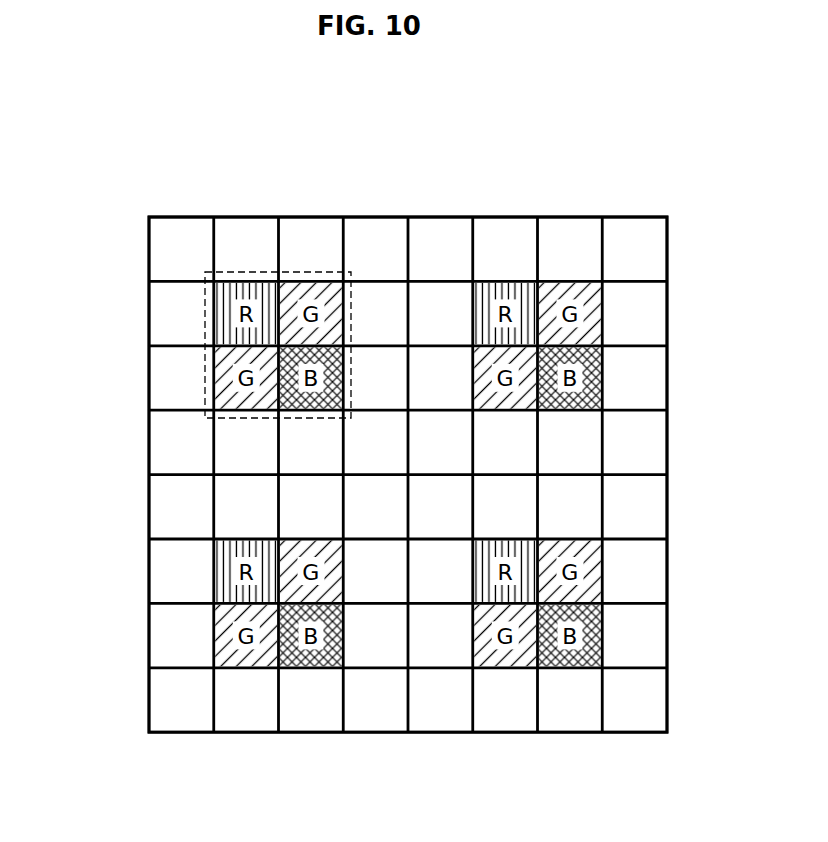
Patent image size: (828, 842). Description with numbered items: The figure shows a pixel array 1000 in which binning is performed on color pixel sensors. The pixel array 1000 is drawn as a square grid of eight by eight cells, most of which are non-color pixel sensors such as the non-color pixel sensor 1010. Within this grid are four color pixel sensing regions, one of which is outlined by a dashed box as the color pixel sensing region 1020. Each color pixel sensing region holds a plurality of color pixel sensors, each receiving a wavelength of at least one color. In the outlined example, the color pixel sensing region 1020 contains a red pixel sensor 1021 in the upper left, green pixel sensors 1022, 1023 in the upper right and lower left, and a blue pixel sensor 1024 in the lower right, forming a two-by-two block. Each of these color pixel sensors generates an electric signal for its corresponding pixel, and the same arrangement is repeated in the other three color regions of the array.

The pixel array 1000 is at (436, 124).
The non-color pixel sensor 1010 is at (160, 250).
The color pixel sensing region 1020 is at (280, 297).
The red pixel sensor 1021 is at (218, 320).
The green pixel sensor 1022 is at (343, 305).
The green pixel sensor 1023 is at (218, 385).
The blue pixel sensor 1024 is at (343, 375).